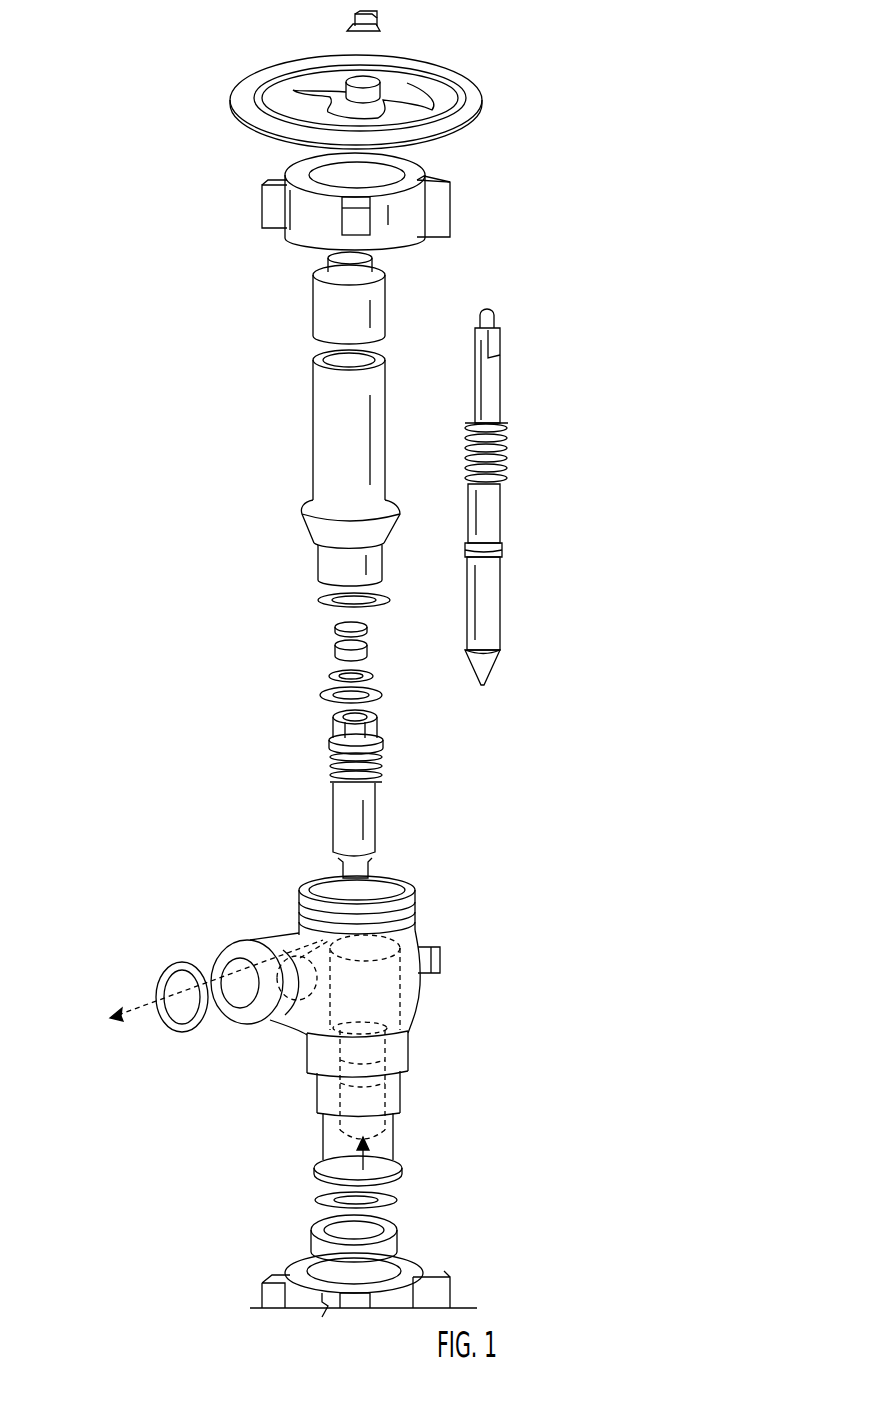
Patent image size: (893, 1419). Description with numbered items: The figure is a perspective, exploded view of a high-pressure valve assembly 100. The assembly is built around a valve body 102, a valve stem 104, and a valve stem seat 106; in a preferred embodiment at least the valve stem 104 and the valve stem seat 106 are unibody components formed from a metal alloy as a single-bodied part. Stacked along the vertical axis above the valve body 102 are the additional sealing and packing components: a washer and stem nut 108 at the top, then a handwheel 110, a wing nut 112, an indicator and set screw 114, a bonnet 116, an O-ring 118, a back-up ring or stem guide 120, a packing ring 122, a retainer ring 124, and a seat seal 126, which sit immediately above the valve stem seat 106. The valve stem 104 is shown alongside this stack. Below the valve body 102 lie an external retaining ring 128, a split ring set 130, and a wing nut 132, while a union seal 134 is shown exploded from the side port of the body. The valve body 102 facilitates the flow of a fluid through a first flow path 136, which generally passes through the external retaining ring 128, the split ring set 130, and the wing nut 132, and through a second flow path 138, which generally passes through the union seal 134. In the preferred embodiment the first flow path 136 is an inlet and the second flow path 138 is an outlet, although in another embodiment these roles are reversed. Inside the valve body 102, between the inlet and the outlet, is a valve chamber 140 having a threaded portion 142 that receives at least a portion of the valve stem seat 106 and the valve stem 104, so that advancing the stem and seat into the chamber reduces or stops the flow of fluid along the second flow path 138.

The high-pressure valve assembly 100 is at (118, 216).
The valve body 102 is at (417, 990).
The valve stem 104 is at (492, 513).
The valve stem seat 106 is at (360, 820).
The washer and stem nut 108 is at (381, 22).
The handwheel 110 is at (473, 100).
The wing nut 112 is at (452, 205).
The indicator and set screw 114 is at (385, 305).
The bonnet 116 is at (327, 467).
The O-ring 118 is at (312, 600).
The back-up ring or stem guide 120 is at (333, 628).
The packing ring 122 is at (328, 647).
The retainer ring 124 is at (327, 673).
The seat seal 126 is at (320, 697).
The external retaining ring 128 is at (397, 1198).
The split ring set 130 is at (390, 1238).
The wing nut 132 is at (417, 1268).
The union seal 134 is at (167, 967).
The first flow path 136 is at (393, 1160).
The second flow path 138 is at (130, 1015).
The valve chamber 140 is at (400, 952).
The threaded portion 142 is at (383, 1054).